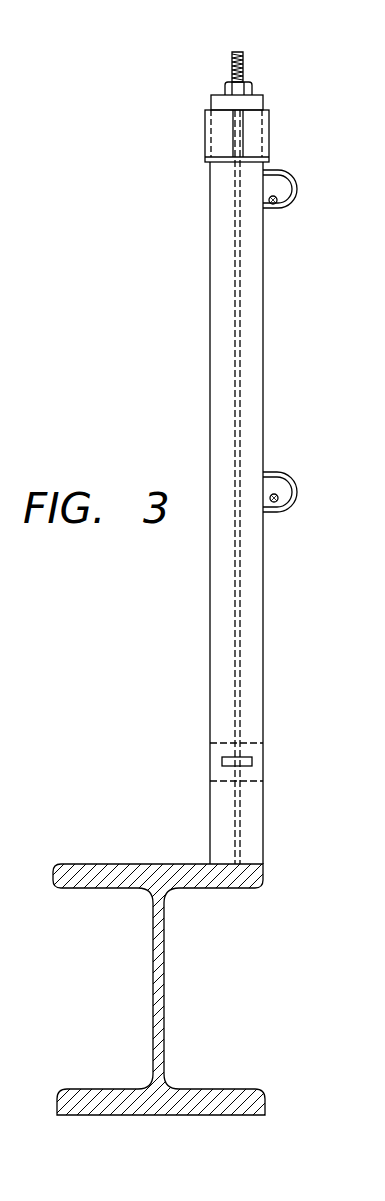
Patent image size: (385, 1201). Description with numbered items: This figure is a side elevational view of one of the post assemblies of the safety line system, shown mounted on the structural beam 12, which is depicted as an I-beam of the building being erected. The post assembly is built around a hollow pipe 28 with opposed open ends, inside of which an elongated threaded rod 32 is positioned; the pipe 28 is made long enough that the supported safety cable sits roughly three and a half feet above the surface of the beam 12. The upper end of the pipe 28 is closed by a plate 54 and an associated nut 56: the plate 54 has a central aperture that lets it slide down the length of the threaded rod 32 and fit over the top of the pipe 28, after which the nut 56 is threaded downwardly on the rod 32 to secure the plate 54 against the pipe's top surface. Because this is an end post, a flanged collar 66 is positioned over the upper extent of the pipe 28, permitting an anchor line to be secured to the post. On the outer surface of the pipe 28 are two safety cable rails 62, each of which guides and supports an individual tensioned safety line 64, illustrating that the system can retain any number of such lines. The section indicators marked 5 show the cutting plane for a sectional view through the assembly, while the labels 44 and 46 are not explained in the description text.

The section line 5- 5 is at (237, 52).
The structural beam 12 is at (164, 963).
The hollow pipe 28 is at (210, 378).
The threaded rod 32 is at (243, 72).
The lower sleeve 44 is at (384, 825).
The inner rod 46 is at (384, 602).
The plate 54 is at (218, 103).
The nut 56 is at (226, 88).
The safety cable rail 62 is at (292, 182).
The tensioned safety line 64 is at (280, 204).
The flanged collar 66 is at (253, 123).